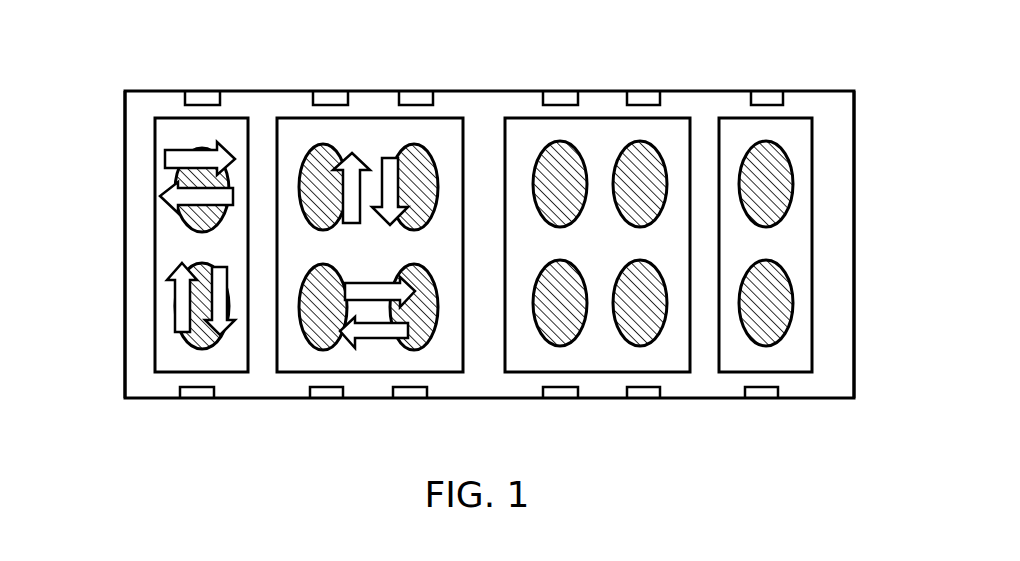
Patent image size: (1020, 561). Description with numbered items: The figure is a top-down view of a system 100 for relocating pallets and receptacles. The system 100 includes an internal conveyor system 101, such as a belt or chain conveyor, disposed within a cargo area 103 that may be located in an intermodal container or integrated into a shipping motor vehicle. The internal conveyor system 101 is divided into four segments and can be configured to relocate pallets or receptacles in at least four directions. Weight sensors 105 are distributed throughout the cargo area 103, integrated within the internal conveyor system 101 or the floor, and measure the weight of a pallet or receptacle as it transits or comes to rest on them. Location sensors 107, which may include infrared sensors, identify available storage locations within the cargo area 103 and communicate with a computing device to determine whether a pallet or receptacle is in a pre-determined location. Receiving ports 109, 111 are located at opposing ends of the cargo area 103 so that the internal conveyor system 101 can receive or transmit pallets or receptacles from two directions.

The system for relocating pallets and receptacles 100 is at (507, 84).
The internal conveyor system 101 is at (300, 374).
The cargo area 103 is at (263, 110).
The weight sensors 105 is at (796, 183).
The location sensors 107 is at (568, 88).
The receiving port 109 is at (859, 305).
The receiving port 111 is at (119, 326).